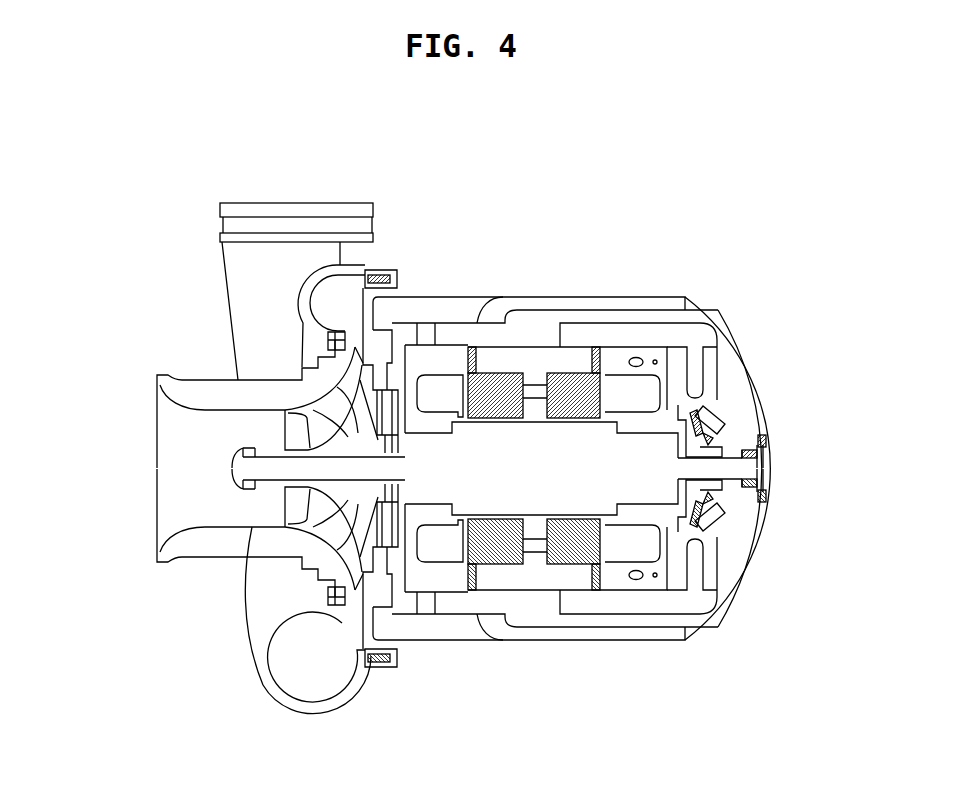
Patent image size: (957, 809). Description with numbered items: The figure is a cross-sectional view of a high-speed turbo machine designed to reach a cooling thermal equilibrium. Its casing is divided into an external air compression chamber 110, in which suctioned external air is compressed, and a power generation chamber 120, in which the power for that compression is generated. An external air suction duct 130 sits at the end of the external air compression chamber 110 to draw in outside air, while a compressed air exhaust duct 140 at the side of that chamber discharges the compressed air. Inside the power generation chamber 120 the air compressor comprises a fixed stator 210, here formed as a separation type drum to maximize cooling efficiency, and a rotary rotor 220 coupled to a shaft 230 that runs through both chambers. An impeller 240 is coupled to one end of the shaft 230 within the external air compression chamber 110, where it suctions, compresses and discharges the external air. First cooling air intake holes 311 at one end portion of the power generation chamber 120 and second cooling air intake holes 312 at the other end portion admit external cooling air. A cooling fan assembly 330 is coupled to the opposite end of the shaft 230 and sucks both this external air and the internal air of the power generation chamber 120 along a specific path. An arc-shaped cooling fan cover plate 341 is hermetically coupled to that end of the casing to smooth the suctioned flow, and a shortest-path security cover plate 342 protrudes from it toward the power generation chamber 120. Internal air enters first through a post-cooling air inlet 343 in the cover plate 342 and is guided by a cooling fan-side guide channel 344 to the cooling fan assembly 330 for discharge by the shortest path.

The external air compression chamber 110 is at (387, 267).
The power generation chamber 120 is at (476, 325).
The external air suction duct 130 is at (157, 465).
The compressed air exhaust duct 140 is at (297, 203).
The stator 210 is at (492, 548).
The rotor 220 is at (548, 488).
The shaft 230 is at (742, 470).
The impeller 240 is at (343, 493).
The first cooling air intake holes 311 is at (432, 335).
The second cooling air intake holes 312 is at (642, 358).
The cooling fan assembly 330 is at (713, 485).
The cooling fan cover plate 341 is at (755, 367).
The shortest-path security cover plate 342 is at (657, 297).
The post-cooling air inlet 343 is at (533, 347).
The cooling fan-side guide channel 344 is at (605, 322).